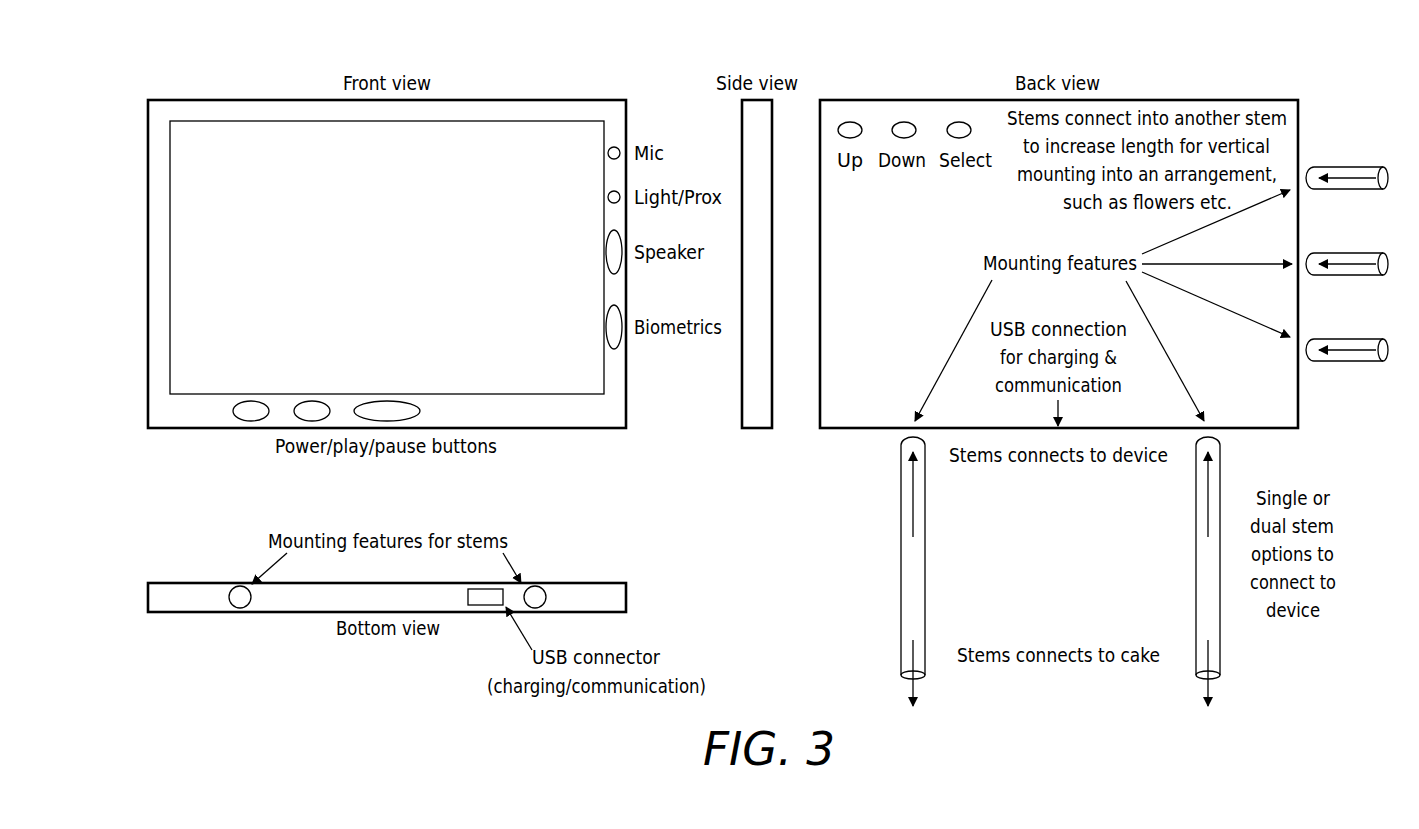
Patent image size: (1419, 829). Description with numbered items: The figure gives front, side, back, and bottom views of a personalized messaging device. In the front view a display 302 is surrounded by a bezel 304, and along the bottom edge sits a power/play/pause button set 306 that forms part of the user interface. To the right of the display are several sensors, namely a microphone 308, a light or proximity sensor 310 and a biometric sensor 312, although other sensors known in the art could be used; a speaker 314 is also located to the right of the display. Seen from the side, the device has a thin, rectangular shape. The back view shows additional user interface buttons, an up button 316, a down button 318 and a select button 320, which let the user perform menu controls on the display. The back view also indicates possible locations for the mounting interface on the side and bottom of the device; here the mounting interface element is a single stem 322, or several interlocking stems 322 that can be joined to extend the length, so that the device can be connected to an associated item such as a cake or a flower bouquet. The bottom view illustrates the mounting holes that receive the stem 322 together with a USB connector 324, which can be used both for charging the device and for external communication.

The display 302 is at (493, 155).
The bezel 304 is at (196, 121).
The power/play/pause button set 306 is at (420, 411).
The microphone 308 is at (608, 153).
The light or proximity sensor 310 is at (608, 197).
The biometric sensor 312 is at (608, 327).
The speaker 314 is at (608, 252).
The up button 316 is at (848, 123).
The down button 318 is at (902, 123).
The select button 320 is at (957, 123).
The stem 322 is at (1347, 166).
The USB connector 324 is at (480, 600).